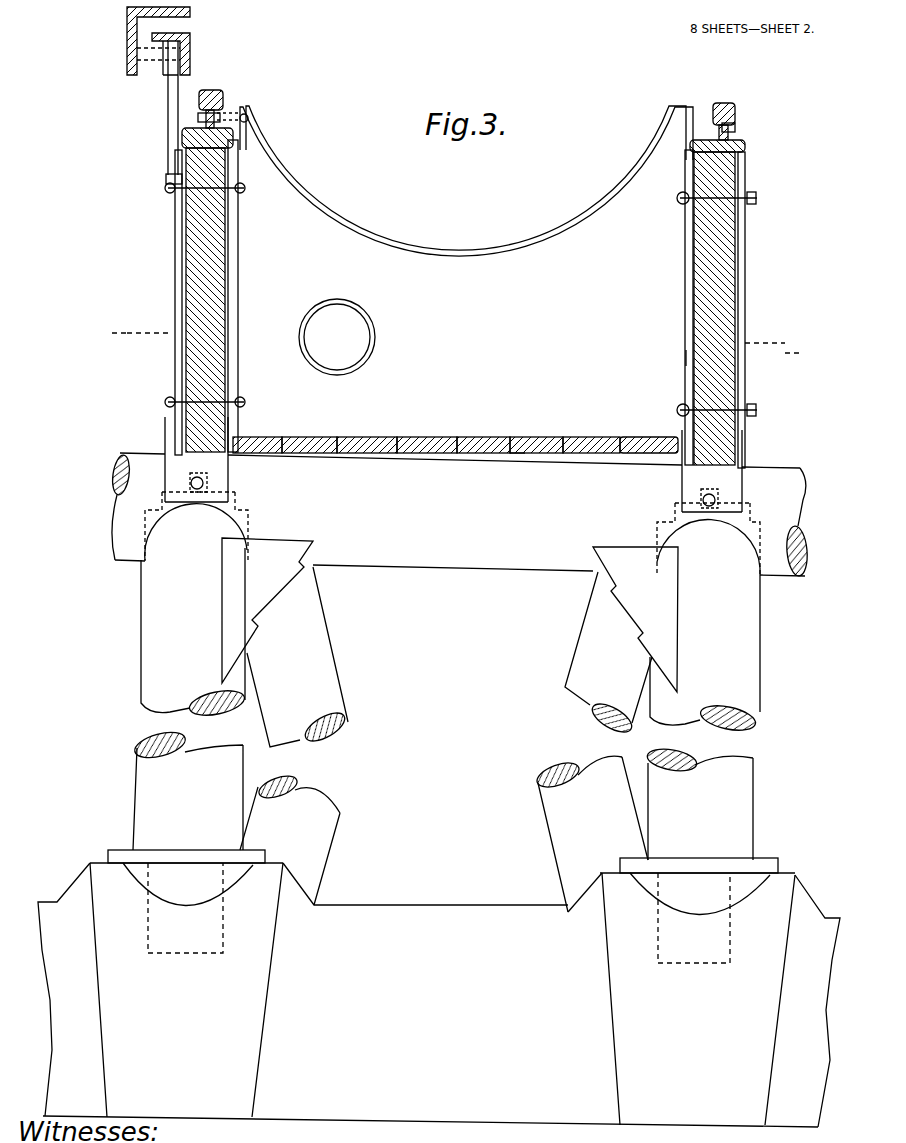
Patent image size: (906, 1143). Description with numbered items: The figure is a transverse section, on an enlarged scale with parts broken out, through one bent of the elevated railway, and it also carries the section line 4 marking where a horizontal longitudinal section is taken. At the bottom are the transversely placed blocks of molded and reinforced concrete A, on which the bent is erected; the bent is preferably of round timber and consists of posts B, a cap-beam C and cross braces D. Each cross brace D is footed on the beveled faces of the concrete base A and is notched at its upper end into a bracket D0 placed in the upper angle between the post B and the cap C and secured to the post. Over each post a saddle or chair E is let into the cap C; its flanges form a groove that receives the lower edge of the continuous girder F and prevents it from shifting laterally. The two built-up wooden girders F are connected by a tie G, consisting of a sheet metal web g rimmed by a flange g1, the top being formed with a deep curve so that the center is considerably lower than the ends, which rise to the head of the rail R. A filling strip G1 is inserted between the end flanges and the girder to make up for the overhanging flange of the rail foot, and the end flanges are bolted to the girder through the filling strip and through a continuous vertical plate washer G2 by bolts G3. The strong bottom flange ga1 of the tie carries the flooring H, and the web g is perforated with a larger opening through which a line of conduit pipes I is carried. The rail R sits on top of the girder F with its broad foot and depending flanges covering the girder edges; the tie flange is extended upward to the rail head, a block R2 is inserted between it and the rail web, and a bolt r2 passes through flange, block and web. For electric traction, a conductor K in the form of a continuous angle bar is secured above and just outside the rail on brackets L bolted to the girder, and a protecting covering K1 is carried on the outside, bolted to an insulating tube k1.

The concrete base block A is at (439, 988).
The post B is at (446, 676).
The cap-beam C is at (459, 515).
The cross brace D is at (446, 739).
The bracket D0 is at (450, 615).
The saddle or chair E is at (218, 473).
The continuous girder F is at (210, 288).
The tie G is at (466, 220).
The web g is at (514, 298).
The flange g1 is at (686, 357).
The bottom flange ga1 is at (517, 437).
The filling strip G1 is at (238, 232).
The vertical plate washer G2 is at (175, 262).
The bolt G3 is at (244, 402).
The flooring H is at (434, 437).
The conduit pipe I is at (337, 337).
The electric conductor K is at (190, 55).
The protecting covering K1 is at (190, 12).
The insulating tube k1 is at (172, 76).
The bracket L is at (168, 129).
The rail R is at (238, 80).
The block R2 is at (230, 108).
The bolt r2 is at (252, 133).
The section line 4- 4 is at (456, 333).